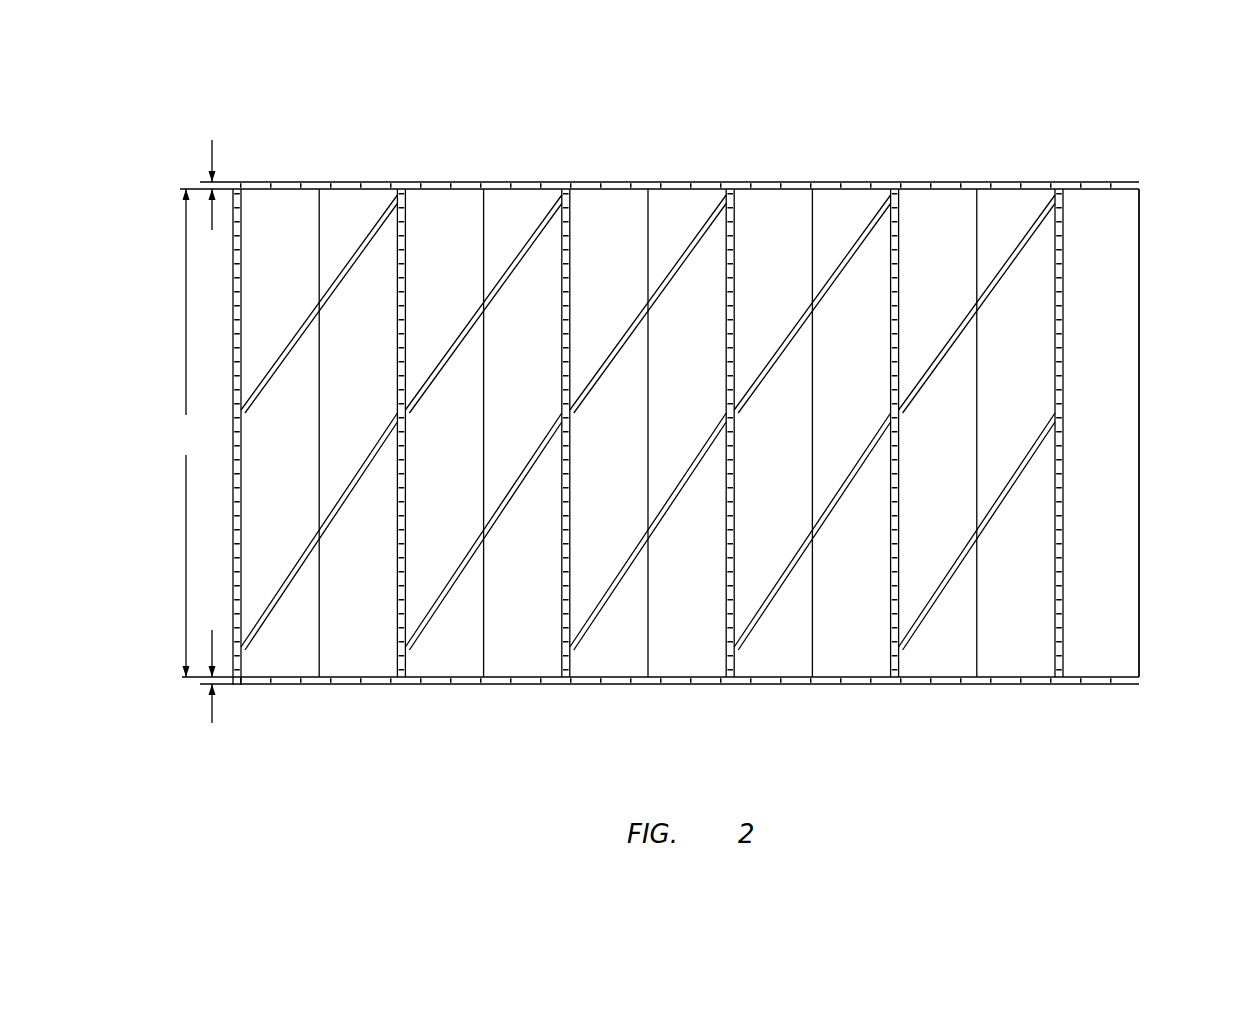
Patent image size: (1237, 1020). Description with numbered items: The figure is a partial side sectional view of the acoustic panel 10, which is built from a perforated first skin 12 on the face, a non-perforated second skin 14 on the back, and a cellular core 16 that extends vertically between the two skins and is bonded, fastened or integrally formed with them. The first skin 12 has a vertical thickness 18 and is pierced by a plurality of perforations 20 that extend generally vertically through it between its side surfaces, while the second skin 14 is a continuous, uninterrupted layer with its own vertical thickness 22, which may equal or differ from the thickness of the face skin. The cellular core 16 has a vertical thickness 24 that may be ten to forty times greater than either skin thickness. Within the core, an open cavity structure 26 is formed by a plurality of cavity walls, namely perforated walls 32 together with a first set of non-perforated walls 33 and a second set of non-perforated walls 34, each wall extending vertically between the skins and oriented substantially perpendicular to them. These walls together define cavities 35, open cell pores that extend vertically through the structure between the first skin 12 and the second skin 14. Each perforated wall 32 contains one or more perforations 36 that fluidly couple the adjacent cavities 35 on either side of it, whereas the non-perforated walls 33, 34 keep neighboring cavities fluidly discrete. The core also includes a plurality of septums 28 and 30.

The acoustic panel 10 is at (1118, 89).
The first skin 12 is at (1138, 177).
The second skin 14 is at (1146, 685).
The cellular core 16 is at (1150, 366).
The vertical thickness 18 is at (212, 140).
The perforations 20 is at (377, 182).
The vertical thickness 22 is at (212, 723).
The vertical thickness 24 is at (184, 433).
The open cavity structure 26 is at (1145, 463).
The septum 28 is at (290, 343).
The septum 30 is at (290, 573).
The perforated walls 32 is at (241, 660).
The non-perforated walls 33 is at (358, 655).
The non-perforated walls 34 is at (285, 655).
The cavities 35 is at (523, 223).
The perforations 36 is at (891, 265).